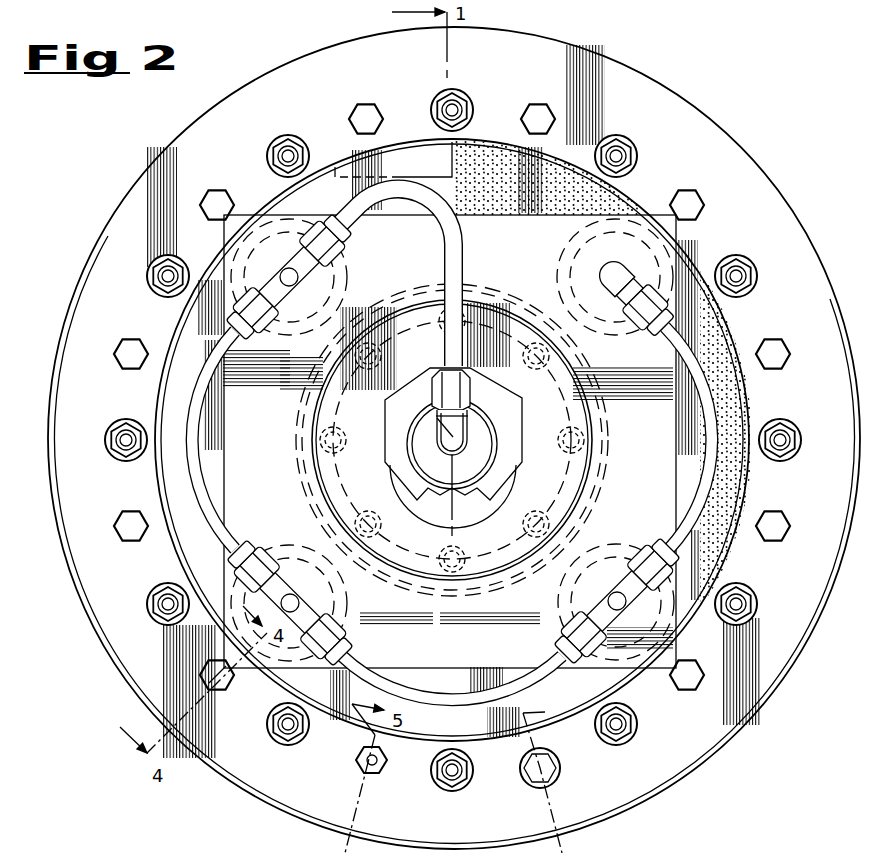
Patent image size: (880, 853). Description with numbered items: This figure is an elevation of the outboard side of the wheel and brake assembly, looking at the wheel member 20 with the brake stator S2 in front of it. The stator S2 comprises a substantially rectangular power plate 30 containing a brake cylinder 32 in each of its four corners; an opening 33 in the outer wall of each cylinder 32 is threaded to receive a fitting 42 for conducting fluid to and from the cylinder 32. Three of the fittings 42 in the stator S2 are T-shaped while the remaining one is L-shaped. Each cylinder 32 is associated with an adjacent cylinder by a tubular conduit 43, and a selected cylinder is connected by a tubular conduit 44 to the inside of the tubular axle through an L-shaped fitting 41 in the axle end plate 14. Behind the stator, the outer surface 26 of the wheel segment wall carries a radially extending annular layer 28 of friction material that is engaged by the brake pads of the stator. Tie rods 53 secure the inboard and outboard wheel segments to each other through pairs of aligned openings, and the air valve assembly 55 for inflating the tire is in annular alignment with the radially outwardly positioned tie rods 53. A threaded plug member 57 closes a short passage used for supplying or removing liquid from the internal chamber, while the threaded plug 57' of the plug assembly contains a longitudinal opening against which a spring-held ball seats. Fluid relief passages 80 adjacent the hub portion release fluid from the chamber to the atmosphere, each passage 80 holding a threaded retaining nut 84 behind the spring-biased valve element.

The wheel member 20 is at (661, 82).
The outer surface 26 is at (170, 400).
The annular layer of friction material 28 is at (712, 330).
The power plate 30 is at (493, 226).
The brake cylinder 32 is at (345, 268).
The opening 33 is at (293, 546).
The L-shaped fitting 41 is at (459, 434).
The fitting 42 is at (298, 302).
The tubular conduit 43 is at (198, 405).
The tubular conduit 44 is at (464, 270).
The axle end plate 14 is at (422, 443).
The tie rods 53 is at (630, 727).
The air valve assembly 55 is at (560, 770).
The threaded plug member 57 is at (223, 698).
The threaded plug 57' is at (388, 775).
The fluid relief passage 80 is at (515, 534).
The retaining nut 84 is at (441, 558).
The stator S2 is at (245, 477).